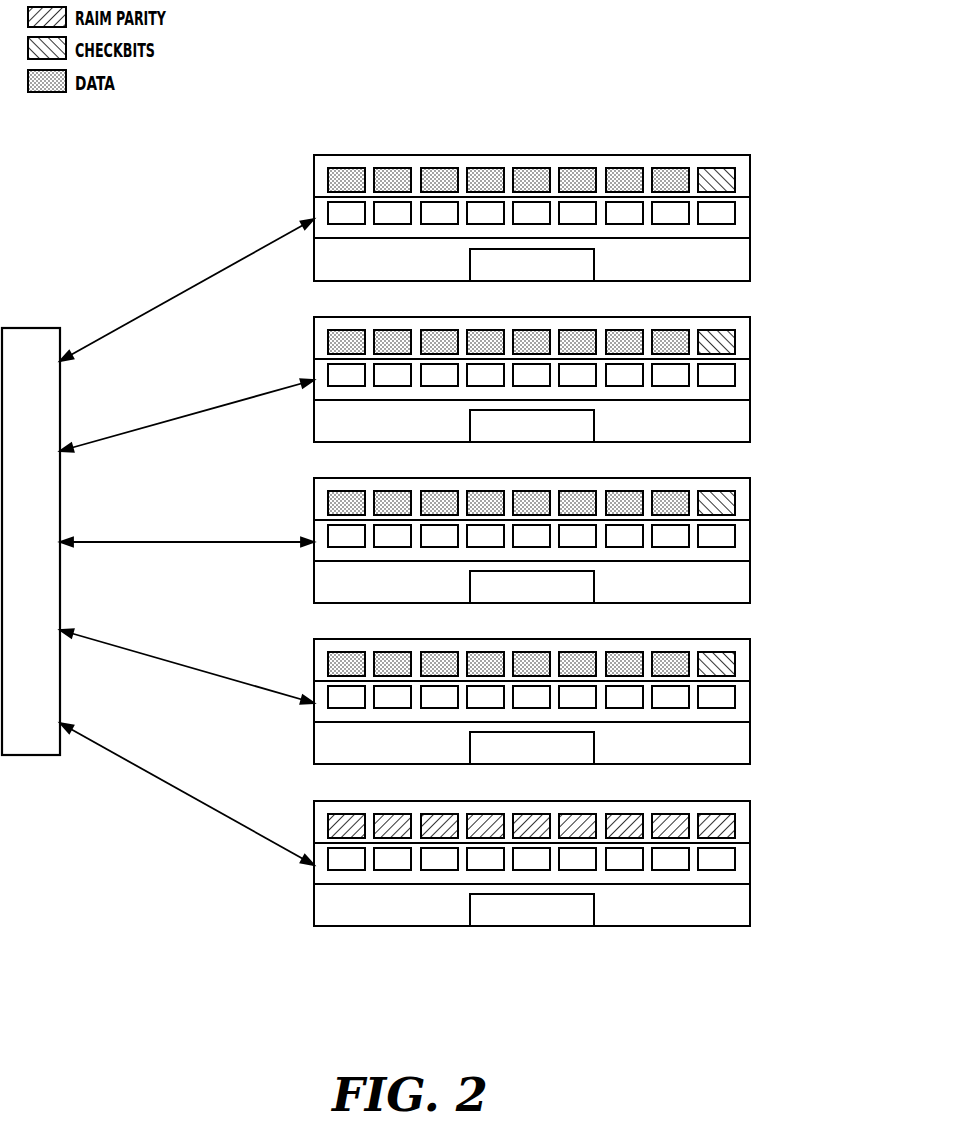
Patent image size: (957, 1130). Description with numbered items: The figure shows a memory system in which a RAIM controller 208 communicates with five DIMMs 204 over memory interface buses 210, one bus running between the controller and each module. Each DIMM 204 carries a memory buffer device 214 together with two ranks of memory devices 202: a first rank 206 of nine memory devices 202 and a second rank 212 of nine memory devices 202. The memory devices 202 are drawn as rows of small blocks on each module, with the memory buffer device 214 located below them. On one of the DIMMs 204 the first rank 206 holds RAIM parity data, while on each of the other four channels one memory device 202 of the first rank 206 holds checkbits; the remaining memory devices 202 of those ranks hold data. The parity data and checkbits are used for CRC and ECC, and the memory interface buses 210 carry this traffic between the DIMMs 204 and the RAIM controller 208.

The memory device 202 is at (532, 173).
The DIMM 204 is at (323, 259).
The first rank 206 is at (680, 164).
The RAIM controller 208 is at (56, 697).
The memory interface bus 210 is at (162, 302).
The second rank 212 is at (727, 210).
The memory buffer device 214 is at (585, 265).